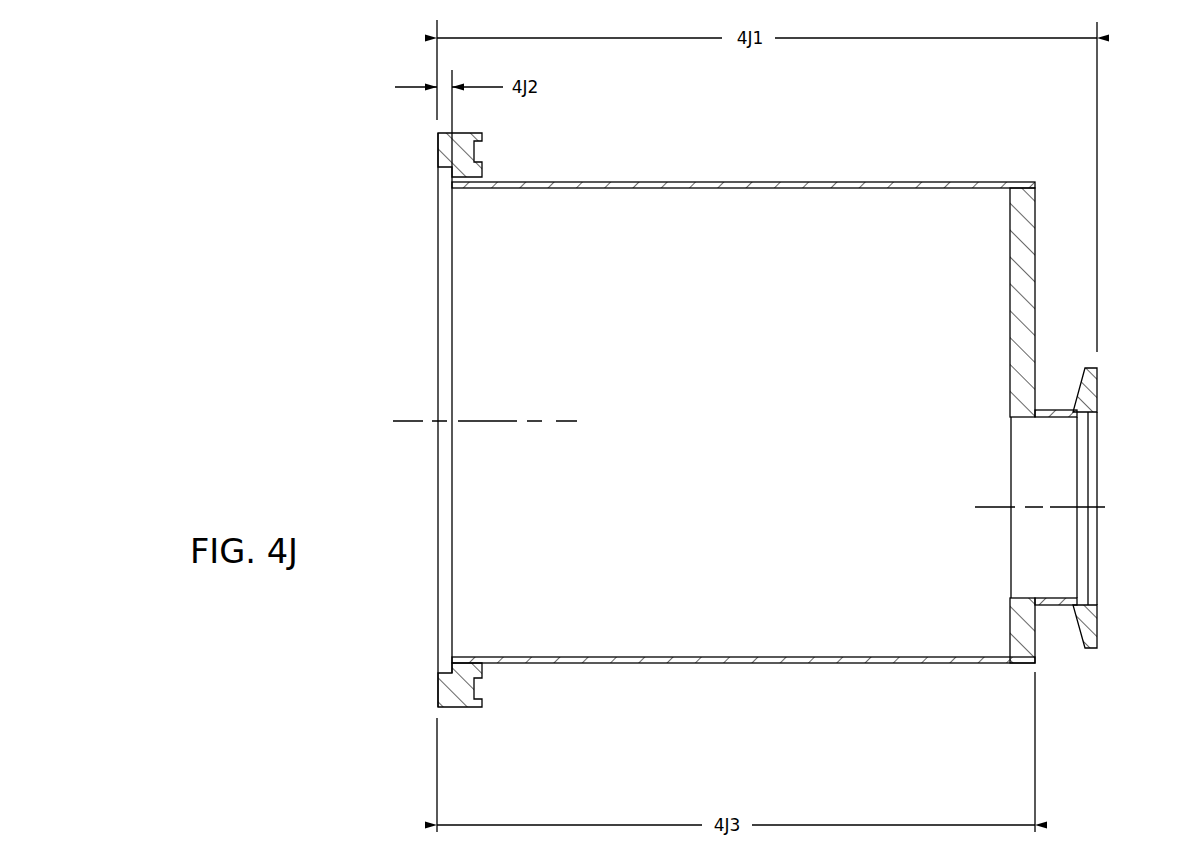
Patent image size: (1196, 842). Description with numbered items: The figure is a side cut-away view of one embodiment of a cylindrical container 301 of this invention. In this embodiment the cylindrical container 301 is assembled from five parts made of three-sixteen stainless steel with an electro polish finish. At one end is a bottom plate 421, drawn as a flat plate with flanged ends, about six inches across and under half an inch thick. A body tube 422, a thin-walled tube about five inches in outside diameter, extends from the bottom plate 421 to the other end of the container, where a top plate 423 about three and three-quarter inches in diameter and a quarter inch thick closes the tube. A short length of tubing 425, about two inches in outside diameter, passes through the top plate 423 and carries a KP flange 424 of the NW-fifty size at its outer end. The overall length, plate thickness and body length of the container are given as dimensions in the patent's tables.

The cylindrical container 301 is at (766, 168).
The bottom plate 421 is at (463, 708).
The body tube 422 is at (705, 664).
The top plate 423 is at (1037, 228).
The KP flange 424 is at (1100, 383).
The tubing 425 is at (1053, 408).